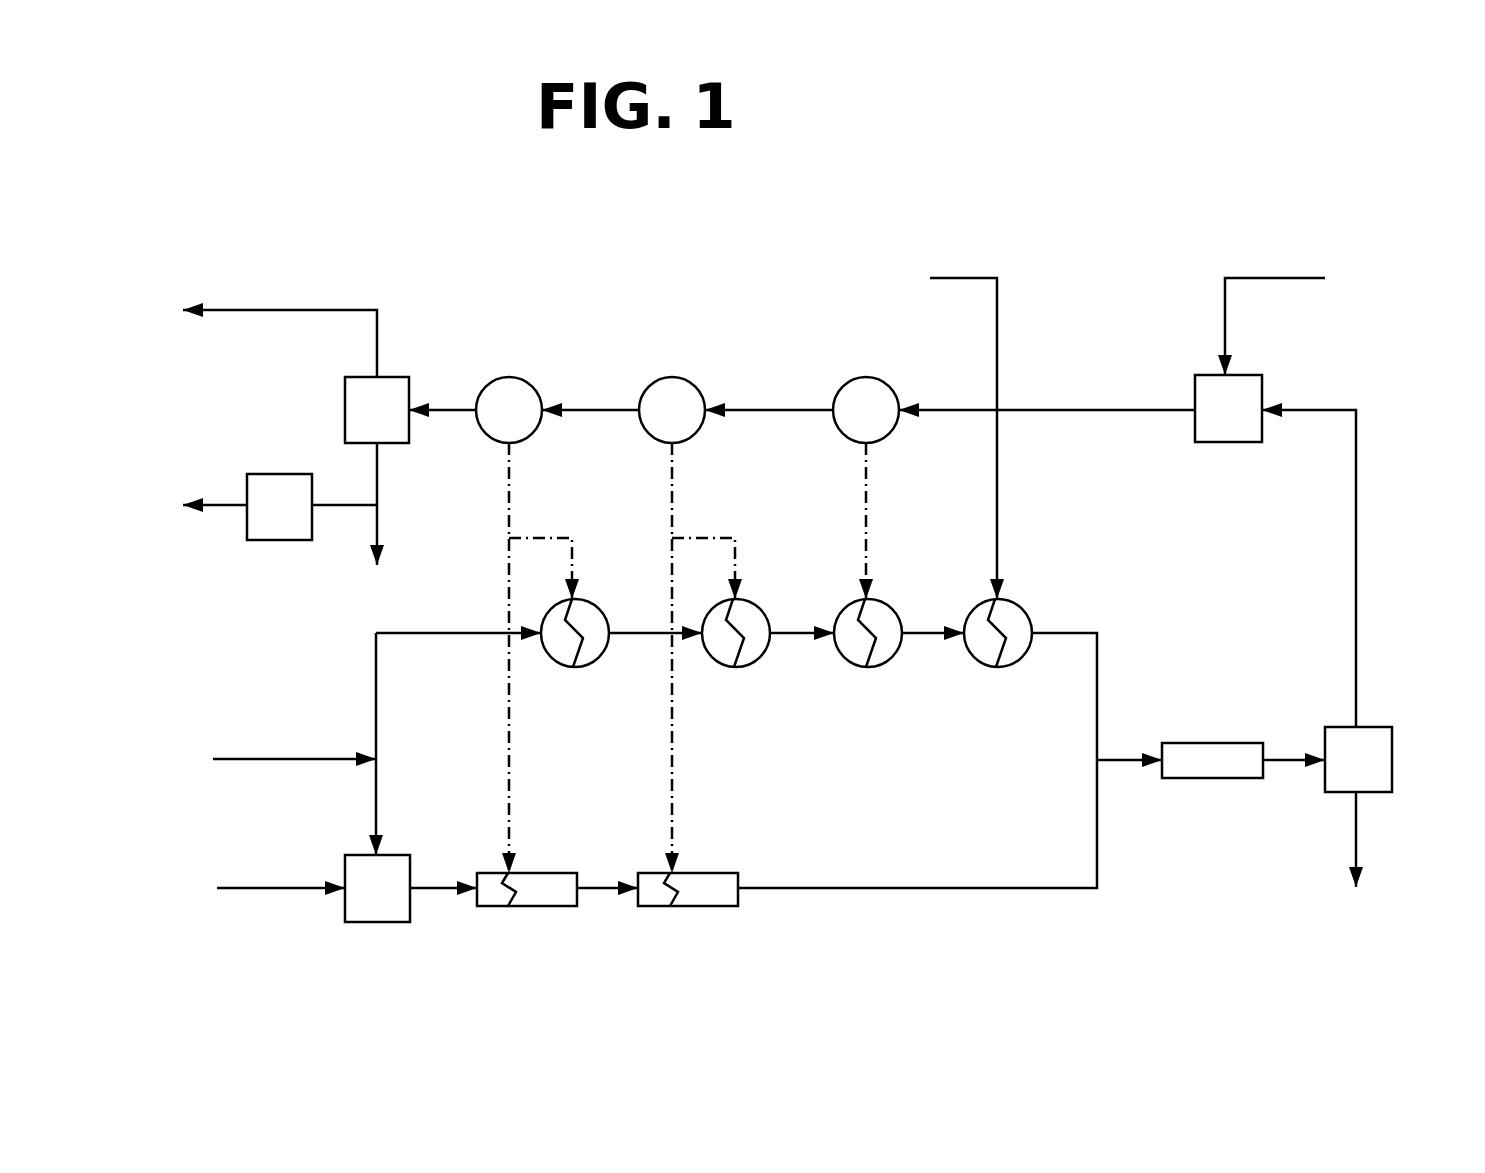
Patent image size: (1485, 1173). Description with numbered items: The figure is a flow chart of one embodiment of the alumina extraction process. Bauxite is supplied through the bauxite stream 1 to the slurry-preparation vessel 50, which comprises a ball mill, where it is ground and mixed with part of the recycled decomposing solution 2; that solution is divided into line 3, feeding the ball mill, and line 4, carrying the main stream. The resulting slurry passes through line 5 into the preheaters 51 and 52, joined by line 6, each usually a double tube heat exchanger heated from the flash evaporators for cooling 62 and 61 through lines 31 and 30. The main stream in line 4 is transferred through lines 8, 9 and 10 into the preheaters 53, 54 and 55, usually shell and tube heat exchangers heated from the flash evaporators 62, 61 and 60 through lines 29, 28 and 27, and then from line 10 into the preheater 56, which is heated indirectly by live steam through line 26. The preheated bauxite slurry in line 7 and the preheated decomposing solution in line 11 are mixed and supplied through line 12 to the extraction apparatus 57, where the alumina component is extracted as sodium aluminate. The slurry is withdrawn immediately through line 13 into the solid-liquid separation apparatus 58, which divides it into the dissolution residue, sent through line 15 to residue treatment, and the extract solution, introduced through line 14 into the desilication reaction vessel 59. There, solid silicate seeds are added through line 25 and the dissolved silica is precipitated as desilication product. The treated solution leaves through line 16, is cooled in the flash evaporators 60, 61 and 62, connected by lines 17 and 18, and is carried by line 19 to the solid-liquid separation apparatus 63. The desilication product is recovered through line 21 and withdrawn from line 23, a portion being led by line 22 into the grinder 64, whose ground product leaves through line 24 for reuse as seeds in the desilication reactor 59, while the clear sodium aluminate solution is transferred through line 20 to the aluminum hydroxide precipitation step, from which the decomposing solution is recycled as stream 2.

The bauxite stream 1 is at (281, 865).
The recycled decomposing solution stream 2 is at (294, 737).
The line 3 is at (358, 744).
The line 4 is at (458, 611).
The line 5 is at (443, 866).
The line 6 is at (607, 865).
The line 7 is at (917, 824).
The line 8 is at (655, 611).
The line 9 is at (802, 611).
The line 10 is at (933, 611).
The line 11 is at (1069, 675).
The line 12 is at (1129, 738).
The line 13 is at (1294, 738).
The line 14 is at (1309, 568).
The line 15 is at (1332, 839).
The line 16 is at (1047, 388).
The line 17 is at (769, 387).
The line 18 is at (590, 387).
The line 19 is at (442, 389).
The line 20 is at (280, 322).
The line 21 is at (402, 474).
The line 22 is at (344, 484).
The line 23 is at (404, 535).
The line 24 is at (215, 484).
The line 25 is at (1275, 303).
The line 26 is at (988, 438).
The line 27 is at (891, 521).
The line 28 is at (728, 556).
The line 29 is at (566, 556).
The line 30 is at (698, 658).
The line 31 is at (535, 658).
The slurry-preparation vessel 50 is at (377, 911).
The preheater 51 is at (527, 911).
The preheater 52 is at (688, 911).
The preheater 53 is at (575, 655).
The preheater 54 is at (736, 655).
The preheater 55 is at (868, 655).
The preheater 56 is at (998, 655).
The extraction apparatus 57 is at (1212, 784).
The solid-liquid separation apparatus 58 is at (1387, 759).
The desilication reaction vessel 59 is at (1228, 432).
The flash evaporator for cooling 60 is at (866, 389).
The flash evaporator for cooling 61 is at (672, 386).
The flash evaporator for cooling 62 is at (509, 387).
The solid-liquid separation apparatus 63 is at (348, 410).
The grinder 64 is at (279, 529).